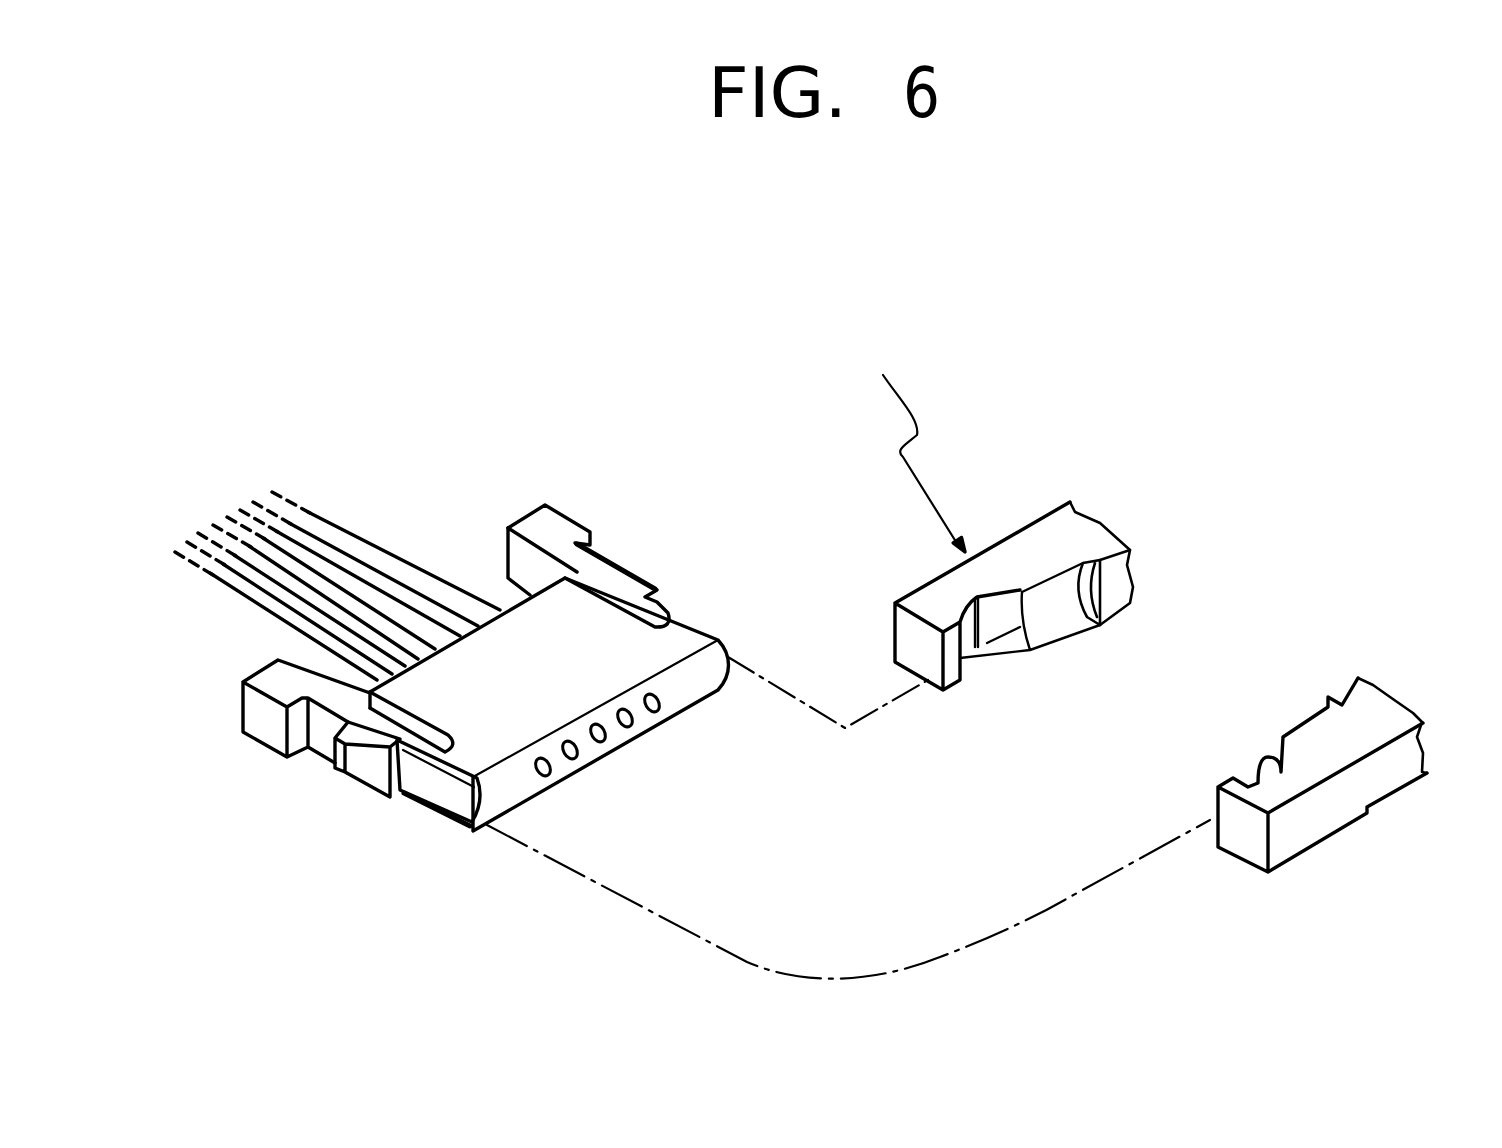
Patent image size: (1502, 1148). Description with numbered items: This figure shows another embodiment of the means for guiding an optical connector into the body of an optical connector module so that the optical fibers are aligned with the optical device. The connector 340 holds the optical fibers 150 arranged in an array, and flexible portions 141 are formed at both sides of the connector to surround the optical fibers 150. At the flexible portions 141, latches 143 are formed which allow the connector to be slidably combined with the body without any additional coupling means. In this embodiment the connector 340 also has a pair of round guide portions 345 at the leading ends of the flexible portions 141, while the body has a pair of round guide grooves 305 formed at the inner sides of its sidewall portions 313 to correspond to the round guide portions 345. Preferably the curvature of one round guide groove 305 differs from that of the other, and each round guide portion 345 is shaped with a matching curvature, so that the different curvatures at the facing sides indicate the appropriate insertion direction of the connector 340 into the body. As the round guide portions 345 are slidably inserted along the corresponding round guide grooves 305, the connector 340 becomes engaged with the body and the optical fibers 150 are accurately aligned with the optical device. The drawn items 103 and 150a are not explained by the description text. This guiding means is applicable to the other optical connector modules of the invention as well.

The substrate / holder base 103 is at (978, 616).
The flexible portions 141 is at (567, 527).
The latches 143 is at (353, 765).
The optical fibers 150 is at (248, 590).
The fiber holes 150a is at (548, 775).
The round guide grooves 305 is at (1055, 612).
The sidewall portions 313 is at (1035, 552).
The connector 340 is at (657, 566).
The round guide portions 345 is at (440, 790).